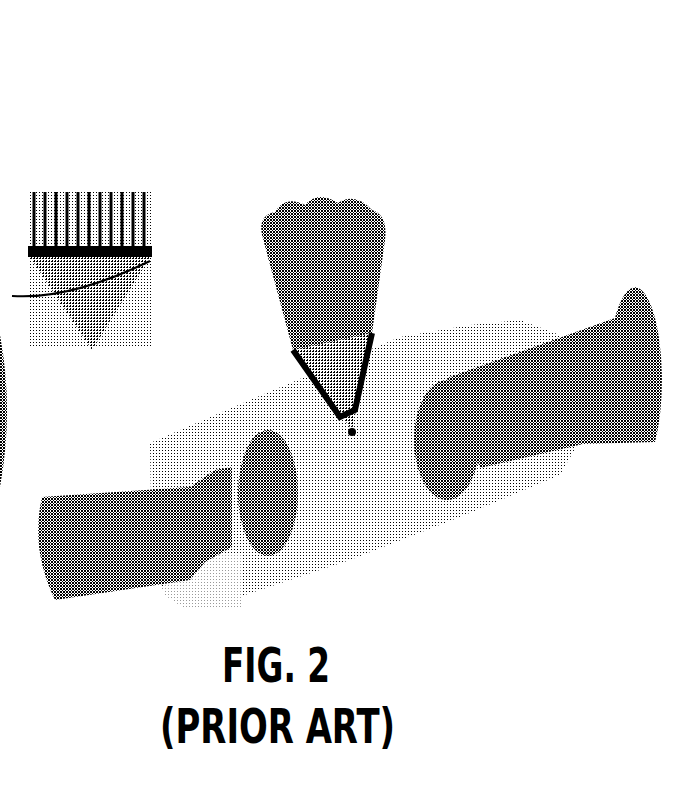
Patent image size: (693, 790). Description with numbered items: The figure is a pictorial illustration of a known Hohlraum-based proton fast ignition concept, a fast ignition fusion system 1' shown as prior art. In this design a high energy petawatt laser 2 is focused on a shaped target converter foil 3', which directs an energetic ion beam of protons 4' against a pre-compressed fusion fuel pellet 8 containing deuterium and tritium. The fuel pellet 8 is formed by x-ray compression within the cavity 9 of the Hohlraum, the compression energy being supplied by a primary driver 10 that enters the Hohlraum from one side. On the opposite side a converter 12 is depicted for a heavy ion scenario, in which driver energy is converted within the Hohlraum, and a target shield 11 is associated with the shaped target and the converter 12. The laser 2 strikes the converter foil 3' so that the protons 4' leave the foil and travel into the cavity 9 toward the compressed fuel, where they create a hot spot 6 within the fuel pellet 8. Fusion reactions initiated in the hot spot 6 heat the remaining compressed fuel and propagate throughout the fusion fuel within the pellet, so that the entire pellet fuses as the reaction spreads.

The fast ignition fusion system 1' is at (340, 321).
The laser 2 is at (297, 347).
The converter foil 3' is at (142, 288).
The energetic ion beam 4' is at (419, 364).
The hot spot 6 is at (252, 327).
The fuel pellet 8 is at (503, 530).
The cavity 9 is at (378, 352).
The primary driver 10 is at (538, 373).
The target shield 11 is at (160, 470).
The converter 12 is at (220, 490).